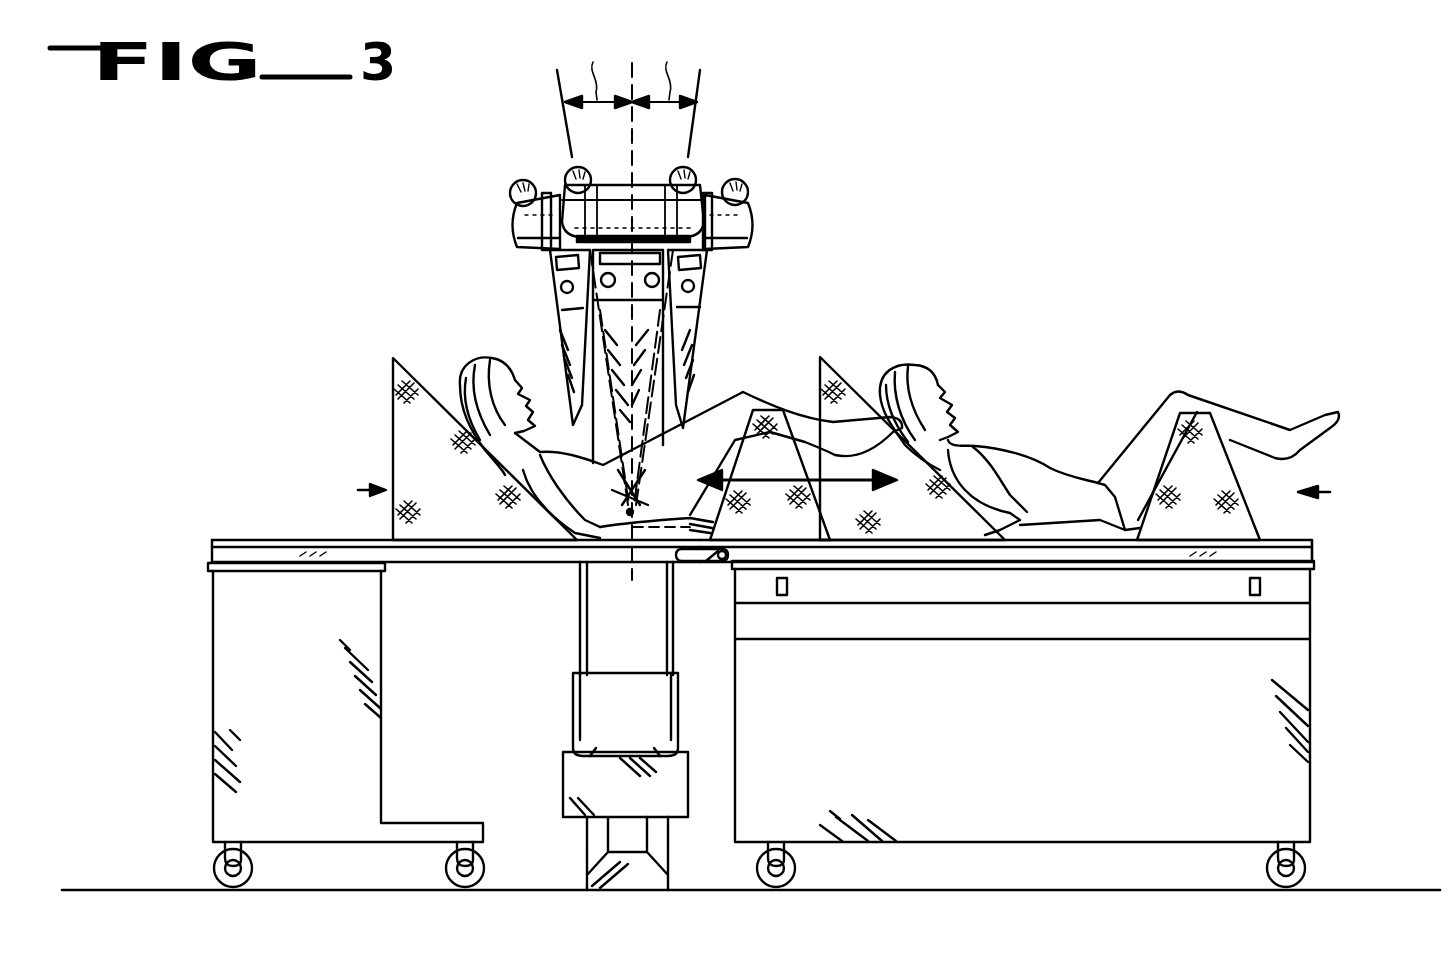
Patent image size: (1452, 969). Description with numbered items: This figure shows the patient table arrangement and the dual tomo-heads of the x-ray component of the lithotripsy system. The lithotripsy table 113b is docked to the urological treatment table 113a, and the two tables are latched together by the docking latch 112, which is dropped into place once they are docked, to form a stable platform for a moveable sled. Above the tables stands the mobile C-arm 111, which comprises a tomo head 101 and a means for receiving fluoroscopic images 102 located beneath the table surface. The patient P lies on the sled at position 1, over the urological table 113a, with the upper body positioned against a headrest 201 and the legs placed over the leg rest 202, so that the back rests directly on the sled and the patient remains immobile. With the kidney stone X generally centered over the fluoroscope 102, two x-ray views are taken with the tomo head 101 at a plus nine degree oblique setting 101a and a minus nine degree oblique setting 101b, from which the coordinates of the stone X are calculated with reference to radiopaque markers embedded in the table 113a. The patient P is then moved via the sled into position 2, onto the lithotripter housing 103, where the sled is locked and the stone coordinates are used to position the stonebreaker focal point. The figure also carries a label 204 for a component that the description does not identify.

The tomo head 101 is at (640, 178).
The +9 degree oblique setting 101a is at (513, 230).
The −9 degree oblique setting 101b is at (750, 225).
The means for receiving fluoroscopic images 102 is at (616, 683).
The lithotripter housing 103 is at (1268, 758).
The mobile C-arm 111 is at (666, 460).
The docking latch 112 is at (704, 563).
The urological treatment table 113a is at (512, 548).
The lithotripsy table 113b is at (1268, 553).
The headrest 201 is at (466, 507).
The leg rest 202 is at (798, 535).
The side cabinet 204 is at (364, 772).
The patient P is at (468, 368).
The kidney stone X is at (622, 508).
The position 1 is at (361, 492).
The position 2 is at (1323, 495).